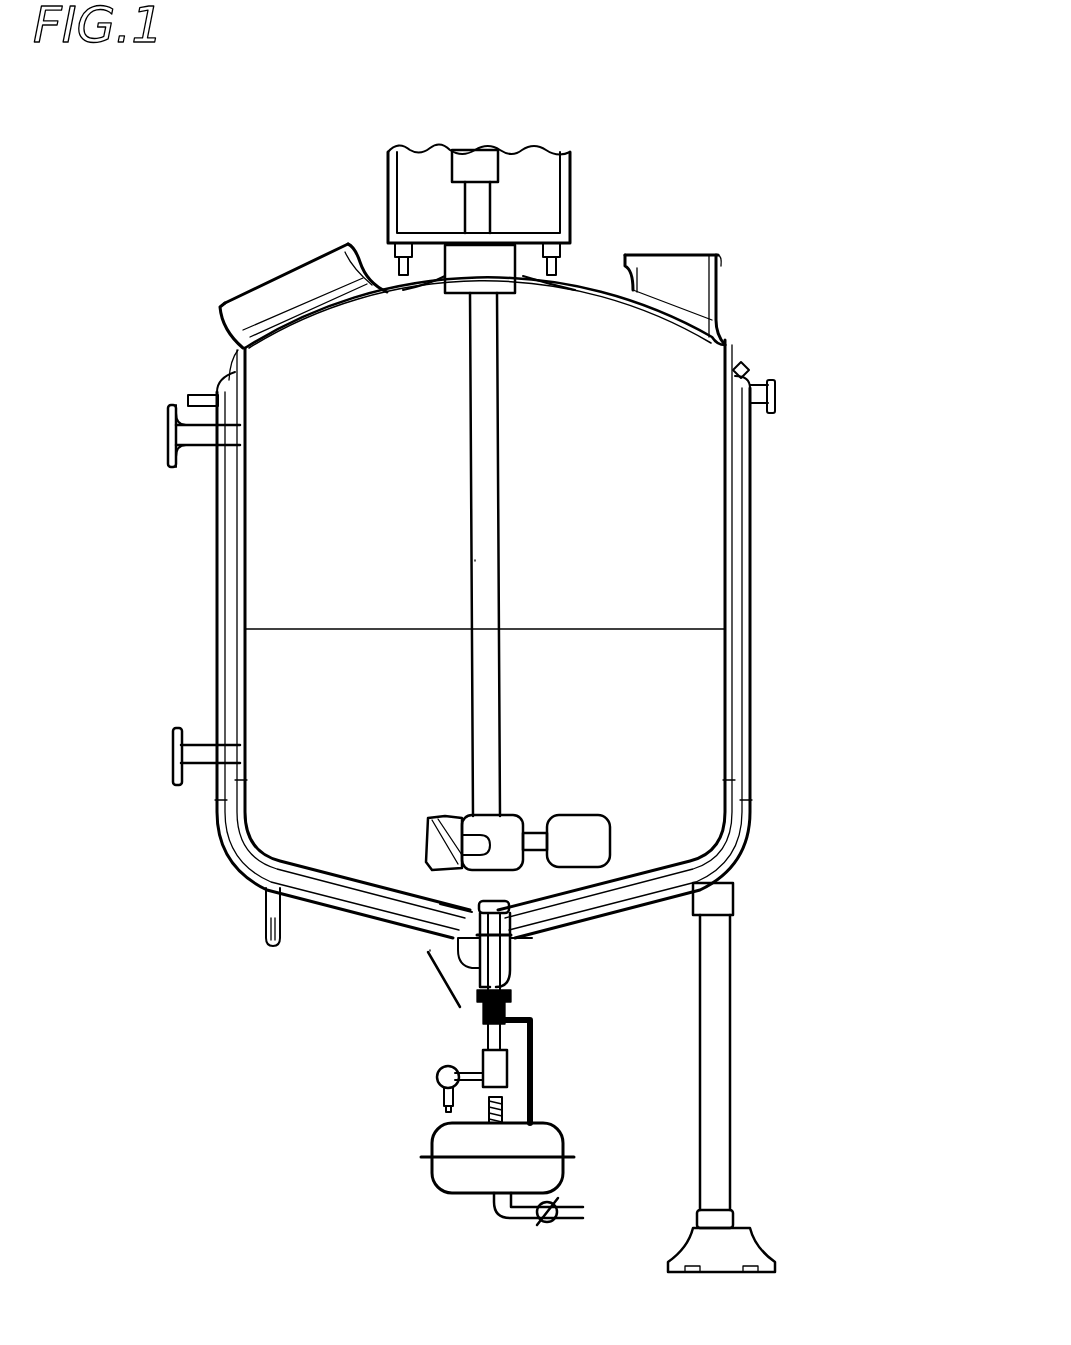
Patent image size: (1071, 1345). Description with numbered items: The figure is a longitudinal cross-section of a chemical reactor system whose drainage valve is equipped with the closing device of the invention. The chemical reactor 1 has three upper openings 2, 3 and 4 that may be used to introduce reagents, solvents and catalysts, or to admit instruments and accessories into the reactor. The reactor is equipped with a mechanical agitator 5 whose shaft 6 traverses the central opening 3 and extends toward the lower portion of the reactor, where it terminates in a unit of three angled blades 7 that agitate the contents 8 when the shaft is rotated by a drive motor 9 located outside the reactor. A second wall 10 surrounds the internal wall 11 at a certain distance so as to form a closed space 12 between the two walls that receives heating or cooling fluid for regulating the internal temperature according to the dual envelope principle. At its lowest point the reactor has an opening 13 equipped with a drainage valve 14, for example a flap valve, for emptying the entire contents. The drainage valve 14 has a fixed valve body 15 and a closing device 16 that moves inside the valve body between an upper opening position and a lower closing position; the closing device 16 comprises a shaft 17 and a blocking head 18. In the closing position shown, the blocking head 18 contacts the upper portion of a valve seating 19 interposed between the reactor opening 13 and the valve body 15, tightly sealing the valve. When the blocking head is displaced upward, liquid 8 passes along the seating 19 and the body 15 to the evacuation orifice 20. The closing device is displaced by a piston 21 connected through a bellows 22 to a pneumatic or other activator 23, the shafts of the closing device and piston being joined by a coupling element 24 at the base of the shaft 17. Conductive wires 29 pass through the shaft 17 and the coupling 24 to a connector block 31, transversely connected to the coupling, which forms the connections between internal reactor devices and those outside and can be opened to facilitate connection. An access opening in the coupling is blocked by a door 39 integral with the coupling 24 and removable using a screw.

The chemical reactor 1 is at (527, 686).
The upper opening 2 is at (246, 270).
The central opening 3 is at (504, 299).
The upper opening 4 is at (677, 243).
The mechanical agitator 5 is at (452, 537).
The shaft 6 is at (487, 498).
The angled blades 7 is at (435, 822).
The contents 8 is at (330, 735).
The drive motor 9 is at (577, 180).
The second wall 10 is at (753, 642).
The internal wall 11 is at (732, 730).
The closed space 12 is at (740, 688).
The opening 13 is at (502, 890).
The drainage valve 14 is at (563, 962).
The valve body 15 is at (513, 963).
The closing device 16 is at (467, 973).
The shaft 17 is at (507, 1003).
The blocking head 18 is at (380, 917).
The valve seating 19 is at (437, 933).
The evacuation orifice 20 is at (437, 973).
The piston 21 is at (502, 1087).
The bellows 22 is at (497, 1112).
The activator 23 is at (568, 1132).
The coupling element 24 is at (515, 1062).
The conductive wires 29 is at (447, 1112).
The connector block 31 is at (436, 1071).
The door 39 is at (485, 1057).